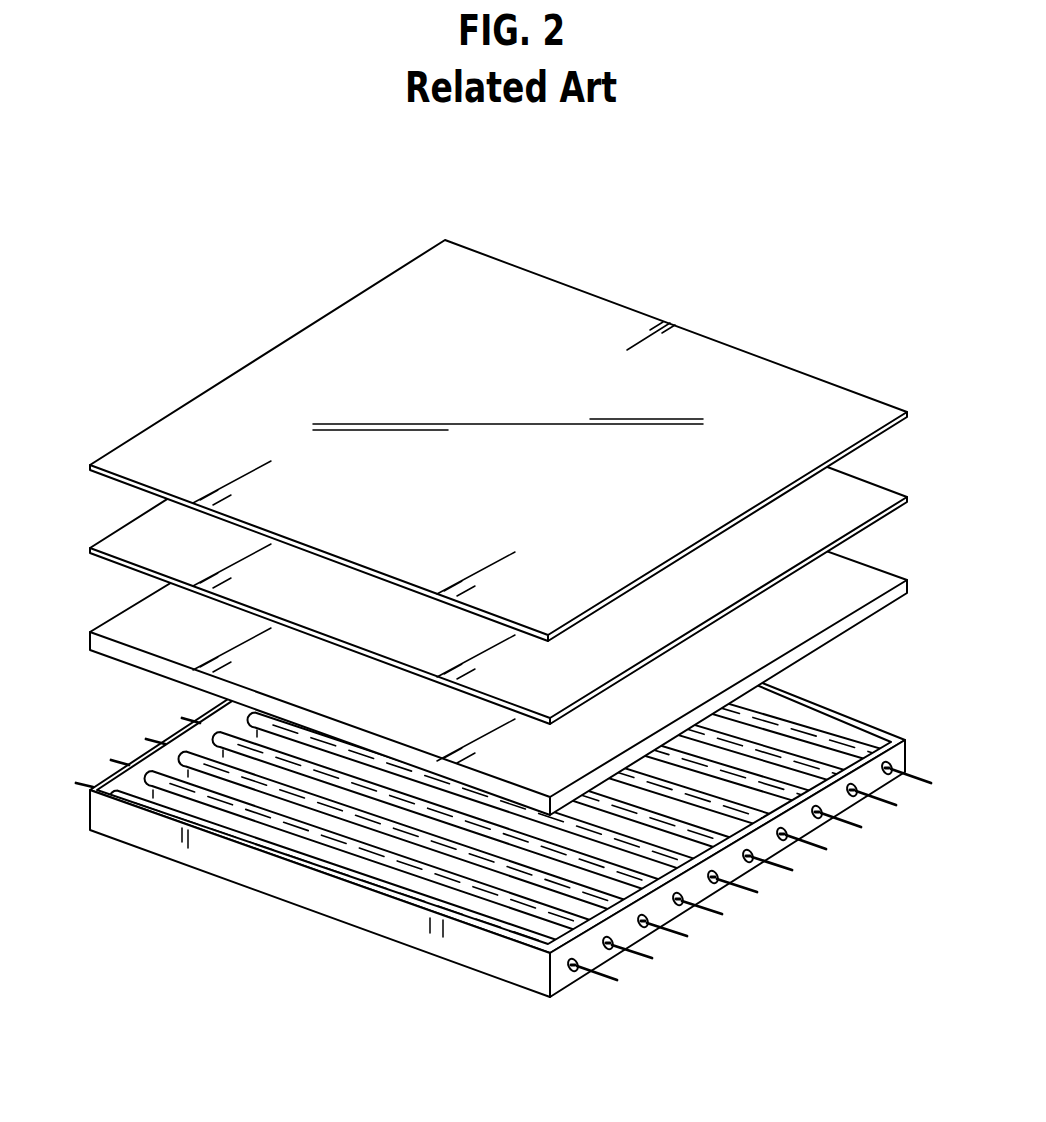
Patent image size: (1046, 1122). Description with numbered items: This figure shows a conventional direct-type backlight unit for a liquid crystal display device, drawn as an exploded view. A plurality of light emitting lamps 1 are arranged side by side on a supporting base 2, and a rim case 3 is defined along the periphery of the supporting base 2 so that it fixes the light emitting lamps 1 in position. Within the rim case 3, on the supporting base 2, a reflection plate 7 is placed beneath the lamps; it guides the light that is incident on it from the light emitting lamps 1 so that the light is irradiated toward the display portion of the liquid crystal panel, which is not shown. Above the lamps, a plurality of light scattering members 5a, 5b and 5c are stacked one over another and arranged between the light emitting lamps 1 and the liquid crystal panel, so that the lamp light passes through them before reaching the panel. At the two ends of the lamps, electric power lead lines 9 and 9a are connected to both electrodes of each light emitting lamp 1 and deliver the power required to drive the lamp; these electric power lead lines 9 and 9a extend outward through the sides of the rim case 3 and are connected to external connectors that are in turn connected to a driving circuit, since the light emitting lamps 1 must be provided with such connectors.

The light emitting lamp 1 is at (338, 842).
The supporting base 2 is at (473, 970).
The rim case 3 is at (528, 975).
The light scattering member 5a is at (855, 574).
The light scattering member 5b is at (855, 490).
The light scattering member 5c is at (855, 400).
The reflection plate 7 is at (466, 867).
The electric power lead line 9 is at (612, 978).
The electric power lead line 9a is at (78, 785).